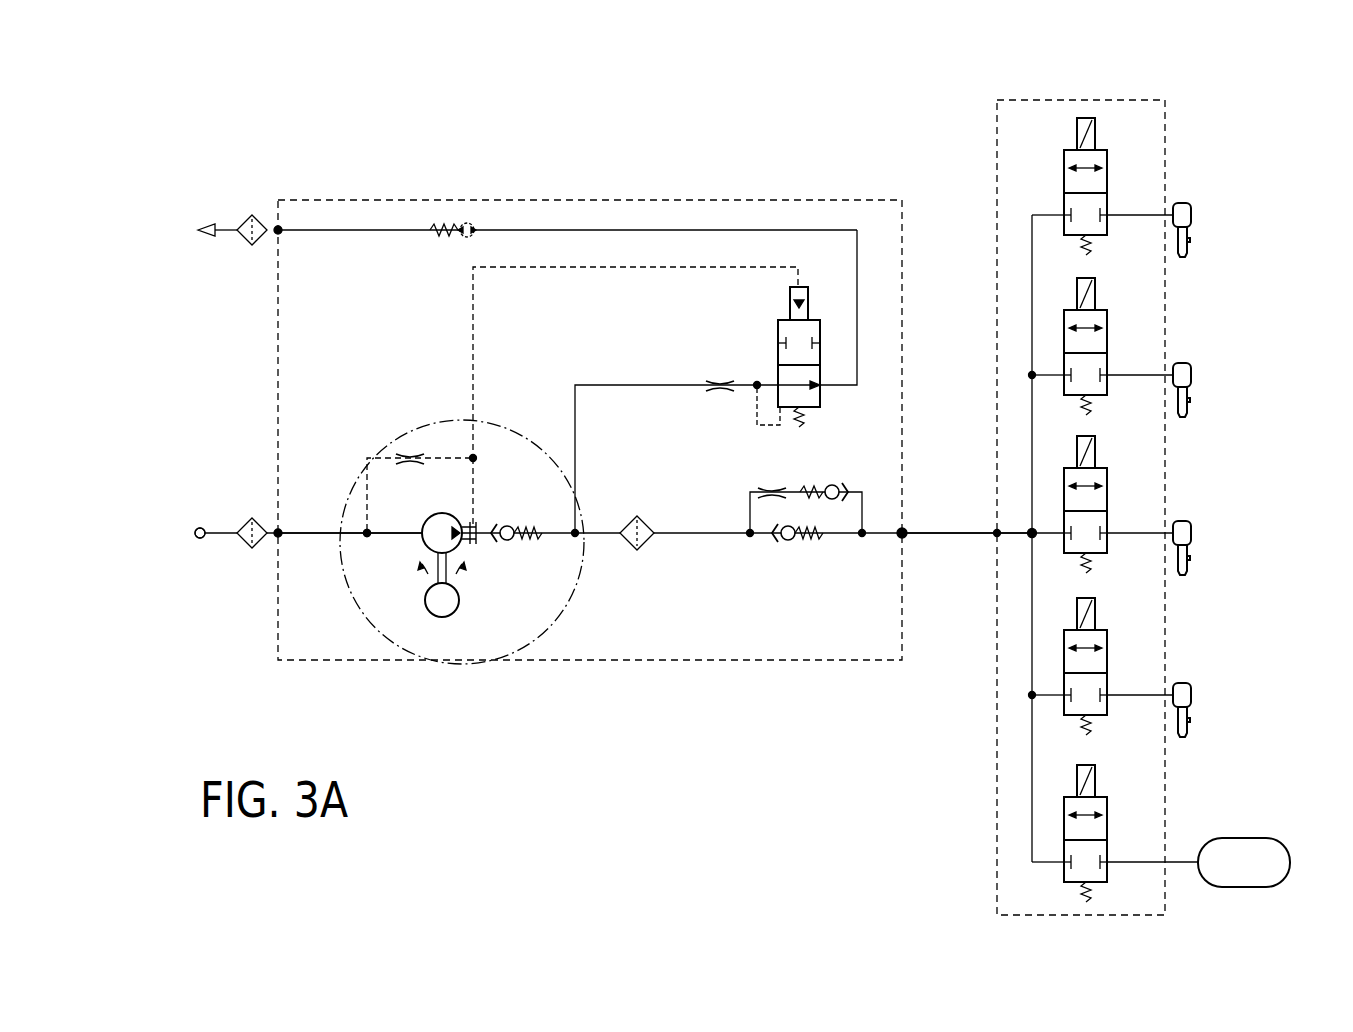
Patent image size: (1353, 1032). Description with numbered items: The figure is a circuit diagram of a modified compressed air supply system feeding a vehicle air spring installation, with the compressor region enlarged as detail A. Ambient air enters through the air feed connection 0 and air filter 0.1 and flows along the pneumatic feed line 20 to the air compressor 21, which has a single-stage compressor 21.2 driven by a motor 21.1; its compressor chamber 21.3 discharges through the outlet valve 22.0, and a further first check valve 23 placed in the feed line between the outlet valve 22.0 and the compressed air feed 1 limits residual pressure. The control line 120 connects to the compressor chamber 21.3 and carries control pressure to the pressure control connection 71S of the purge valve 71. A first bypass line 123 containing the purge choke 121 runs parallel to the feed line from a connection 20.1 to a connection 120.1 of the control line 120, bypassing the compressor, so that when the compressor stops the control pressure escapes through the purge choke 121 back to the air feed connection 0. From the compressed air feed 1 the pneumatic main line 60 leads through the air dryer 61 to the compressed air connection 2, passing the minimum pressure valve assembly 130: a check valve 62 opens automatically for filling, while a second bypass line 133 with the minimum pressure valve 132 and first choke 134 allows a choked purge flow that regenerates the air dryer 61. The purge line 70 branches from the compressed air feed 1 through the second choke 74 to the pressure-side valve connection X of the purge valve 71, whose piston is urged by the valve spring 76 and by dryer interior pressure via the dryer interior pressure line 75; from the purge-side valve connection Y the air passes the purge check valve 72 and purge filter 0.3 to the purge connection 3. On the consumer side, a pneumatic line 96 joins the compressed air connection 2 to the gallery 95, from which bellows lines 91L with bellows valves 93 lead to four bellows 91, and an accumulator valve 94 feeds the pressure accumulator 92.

The air feed connection 0 is at (264, 543).
The air filter 0.1 is at (244, 520).
The purge filter 0.3 is at (246, 222).
The purge connection 3 is at (276, 234).
The pneumatic feed line 20 is at (326, 532).
The connection of the pneumatic feed line 20.1 is at (367, 534).
The air compressor 21 is at (457, 542).
The motor 21.1 is at (398, 588).
The compressor 21.2 is at (425, 542).
The compressor chamber 21.3 is at (434, 520).
The outlet valve 22.0 is at (480, 522).
The first check valve 23 is at (514, 526).
The detail A is at (510, 649).
The control line 120 is at (472, 301).
The connection of the control line 120.1 is at (472, 456).
The purge choke 121 is at (410, 451).
The first bypass line 123 is at (367, 470).
The purge check valve 72 is at (446, 227).
The purge line 70 is at (643, 383).
The purge valve 71 is at (782, 318).
The pressure control connection 71S is at (800, 286).
The second choke 74 is at (714, 394).
The dryer interior pressure line 75 is at (754, 419).
The valve spring 76 is at (808, 424).
The pressure-side valve connection X is at (776, 381).
The purge-side valve connection Y is at (824, 385).
The pneumatic main line 60 is at (638, 533).
The air dryer 61 is at (626, 542).
The compressed air feed 1 is at (592, 516).
The minimum pressure valve assembly 130 is at (799, 546).
The check valve 62 is at (804, 544).
The minimum pressure valve 132 is at (813, 486).
The second bypass line 133 is at (854, 492).
The first choke 134 is at (768, 484).
The compressed air connection 2 is at (904, 530).
The pneumatic line 96 is at (978, 532).
The gallery 95 is at (1030, 426).
The bellows lines 91L is at (1050, 210).
The bellows valve 93 is at (1106, 160).
The accumulator valve 94 is at (1106, 808).
The bellows 91 is at (1190, 210).
The pressure accumulator 92 is at (1286, 844).